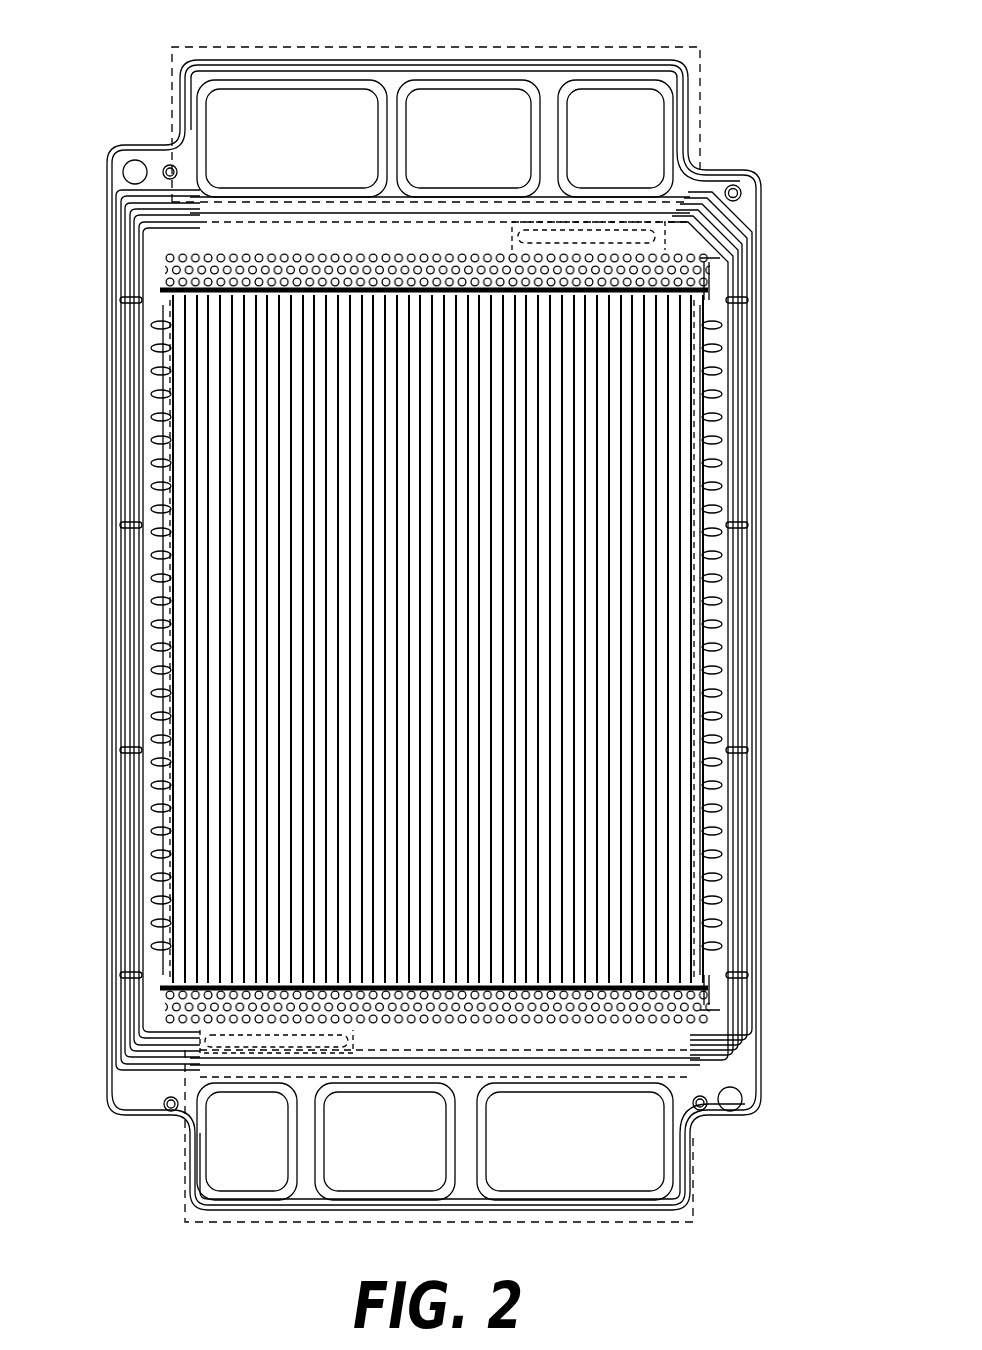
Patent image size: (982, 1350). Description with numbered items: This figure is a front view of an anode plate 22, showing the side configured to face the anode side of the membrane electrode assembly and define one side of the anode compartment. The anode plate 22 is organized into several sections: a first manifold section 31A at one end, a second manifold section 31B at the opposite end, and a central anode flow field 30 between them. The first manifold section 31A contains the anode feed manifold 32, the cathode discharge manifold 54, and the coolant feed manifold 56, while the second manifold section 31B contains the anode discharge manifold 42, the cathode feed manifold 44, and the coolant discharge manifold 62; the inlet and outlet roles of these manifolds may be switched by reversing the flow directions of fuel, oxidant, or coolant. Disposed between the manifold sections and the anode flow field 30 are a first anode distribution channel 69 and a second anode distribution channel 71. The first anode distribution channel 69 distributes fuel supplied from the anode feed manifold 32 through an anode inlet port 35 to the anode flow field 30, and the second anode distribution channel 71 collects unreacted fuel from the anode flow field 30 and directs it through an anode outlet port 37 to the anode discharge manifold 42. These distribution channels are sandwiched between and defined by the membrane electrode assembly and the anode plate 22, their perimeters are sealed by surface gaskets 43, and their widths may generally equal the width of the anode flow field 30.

The anode plate 22 is at (110, 38).
The anode flow field 30 is at (700, 366).
The first manifold section 31A is at (712, 47).
The second manifold section 31B is at (695, 1210).
The anode feed manifold 32 is at (628, 151).
The anode inlet port 35 is at (665, 212).
The anode outlet port 37 is at (206, 1040).
The anode discharge manifold 42 is at (258, 1151).
The surface gaskets 43 is at (152, 280).
The cathode feed manifold 44 is at (584, 1151).
The cathode discharge manifold 54 is at (294, 151).
The coolant feed manifold 56 is at (492, 151).
The coolant discharge manifold 62 is at (400, 1151).
The first anode distribution channel 69 is at (704, 268).
The second anode distribution channel 71 is at (712, 985).